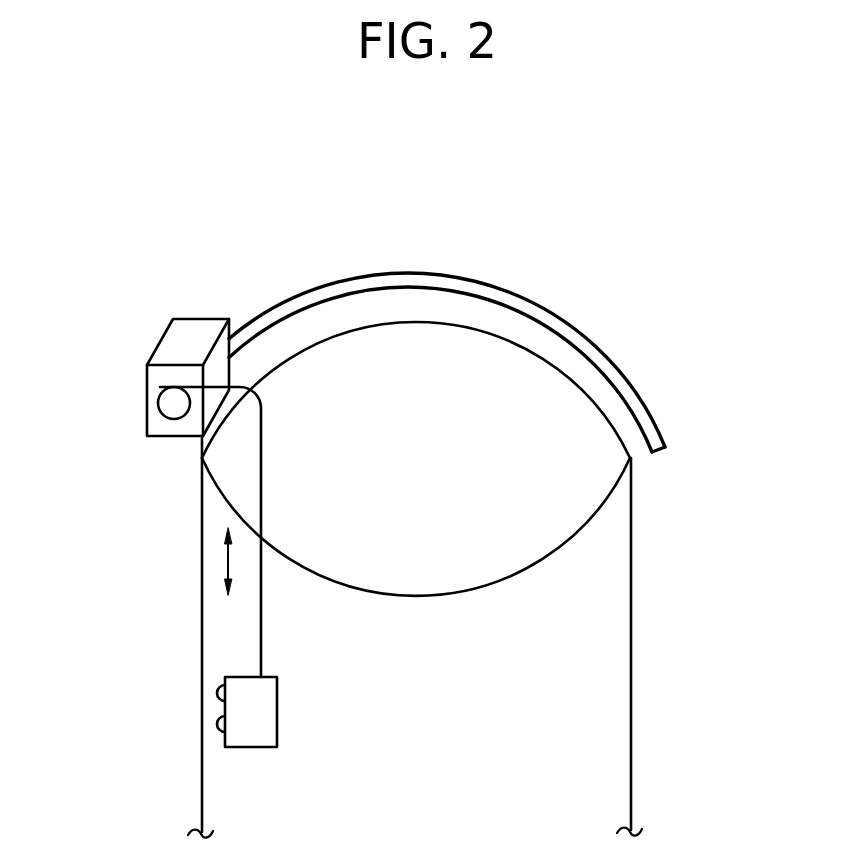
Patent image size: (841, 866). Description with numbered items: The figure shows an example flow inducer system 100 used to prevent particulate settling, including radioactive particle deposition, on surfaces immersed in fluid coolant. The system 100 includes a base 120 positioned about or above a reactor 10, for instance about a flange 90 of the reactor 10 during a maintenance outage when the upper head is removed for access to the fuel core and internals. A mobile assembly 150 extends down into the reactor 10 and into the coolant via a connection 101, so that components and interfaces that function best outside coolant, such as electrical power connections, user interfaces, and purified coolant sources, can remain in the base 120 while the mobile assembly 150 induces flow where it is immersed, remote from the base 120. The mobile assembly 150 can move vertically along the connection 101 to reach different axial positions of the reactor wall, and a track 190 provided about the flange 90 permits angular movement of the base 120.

The reactor 10 is at (630, 767).
The flange 90 is at (631, 458).
The flow inducer system 100 is at (97, 304).
The connection 101 is at (262, 432).
The base 120 is at (163, 434).
The mobile assembly 150 is at (255, 708).
The track 190 is at (588, 339).